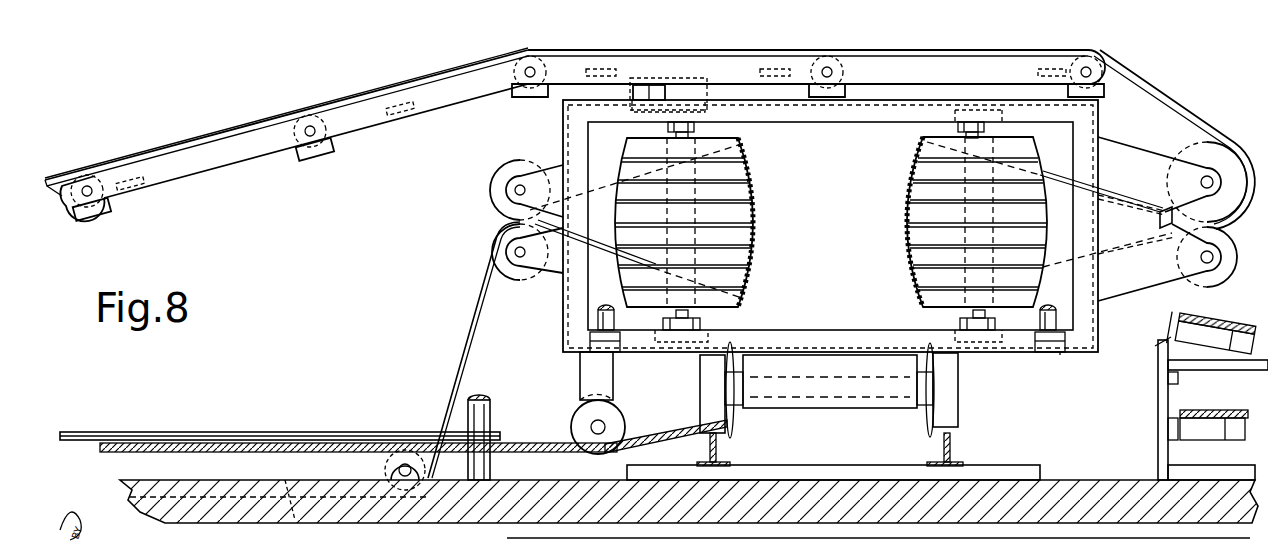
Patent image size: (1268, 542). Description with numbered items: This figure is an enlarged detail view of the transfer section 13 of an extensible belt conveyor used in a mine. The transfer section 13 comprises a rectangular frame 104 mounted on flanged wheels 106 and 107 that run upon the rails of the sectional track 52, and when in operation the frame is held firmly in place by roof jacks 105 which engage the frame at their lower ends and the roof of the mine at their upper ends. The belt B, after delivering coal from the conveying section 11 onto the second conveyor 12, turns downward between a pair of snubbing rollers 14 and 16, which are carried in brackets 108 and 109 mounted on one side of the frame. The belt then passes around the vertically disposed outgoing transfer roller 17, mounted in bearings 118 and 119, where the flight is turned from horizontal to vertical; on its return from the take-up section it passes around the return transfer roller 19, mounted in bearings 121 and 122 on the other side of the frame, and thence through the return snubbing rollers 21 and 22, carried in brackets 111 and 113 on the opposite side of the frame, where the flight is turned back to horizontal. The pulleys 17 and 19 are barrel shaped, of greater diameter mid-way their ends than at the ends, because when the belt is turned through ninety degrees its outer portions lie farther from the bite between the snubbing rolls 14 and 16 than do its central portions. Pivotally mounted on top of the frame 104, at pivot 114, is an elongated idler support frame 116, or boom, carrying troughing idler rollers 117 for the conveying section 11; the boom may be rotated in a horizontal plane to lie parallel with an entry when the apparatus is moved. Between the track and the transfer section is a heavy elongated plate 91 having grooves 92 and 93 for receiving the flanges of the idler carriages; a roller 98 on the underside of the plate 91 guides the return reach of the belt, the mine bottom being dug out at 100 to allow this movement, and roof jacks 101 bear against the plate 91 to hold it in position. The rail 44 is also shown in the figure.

The conveying section 11 is at (131, 155).
The second conveyor 12 is at (1235, 317).
The transfer section 13 is at (1027, 358).
The snubbing roller 14 is at (1193, 168).
The snubbing roller 16 is at (1193, 250).
The outgoing transfer roller 17 is at (930, 212).
The return transfer roller 19 is at (726, 195).
The snubbing roller 21 is at (500, 175).
The snubbing roller 22 is at (505, 255).
The rail 44 is at (665, 430).
The sectional track 52 is at (722, 450).
The elongated plate 91 is at (288, 431).
The groove 92 is at (118, 432).
The groove 93 is at (350, 432).
The roller 98 is at (388, 464).
The dug-out mine bottom 100 is at (285, 525).
The roof jack 101 is at (490, 415).
The rectangular frame 104 is at (576, 304).
The roof jack 105 is at (605, 308).
The flanged wheel 106 is at (732, 345).
The flanged wheel 107 is at (933, 372).
The bracket 108 is at (1125, 150).
The bracket 109 is at (1130, 298).
The bracket 111 is at (553, 165).
The bracket 113 is at (552, 262).
The pivot 114 is at (665, 95).
The idler support frame 116 is at (374, 116).
The troughing idler roller 117 is at (93, 178).
The bearing 118 is at (962, 126).
The bearing 119 is at (990, 324).
The bearing 121 is at (694, 128).
The bearing 122 is at (702, 325).
The belt B is at (745, 265).